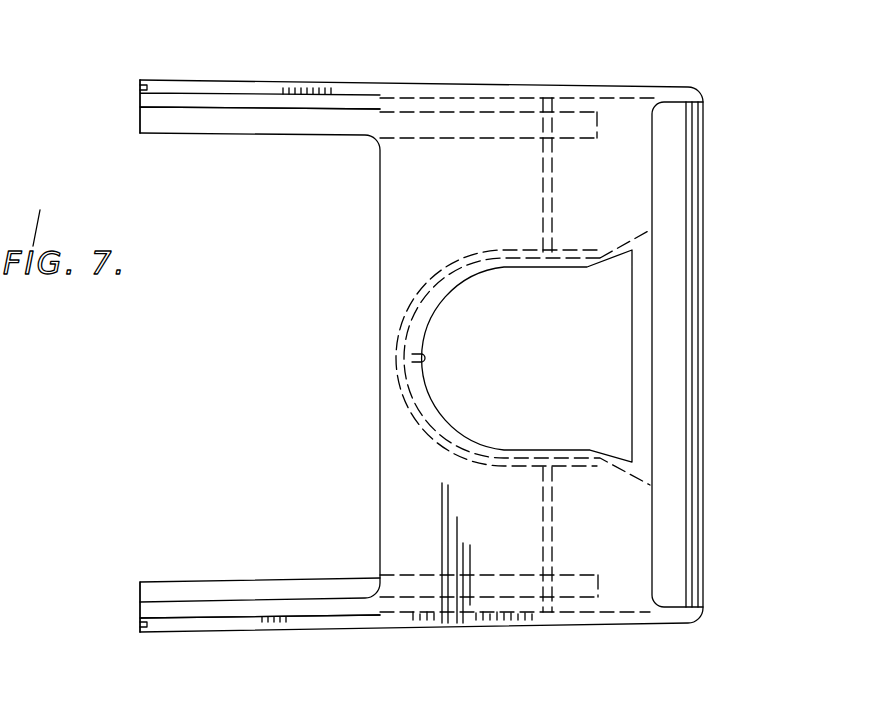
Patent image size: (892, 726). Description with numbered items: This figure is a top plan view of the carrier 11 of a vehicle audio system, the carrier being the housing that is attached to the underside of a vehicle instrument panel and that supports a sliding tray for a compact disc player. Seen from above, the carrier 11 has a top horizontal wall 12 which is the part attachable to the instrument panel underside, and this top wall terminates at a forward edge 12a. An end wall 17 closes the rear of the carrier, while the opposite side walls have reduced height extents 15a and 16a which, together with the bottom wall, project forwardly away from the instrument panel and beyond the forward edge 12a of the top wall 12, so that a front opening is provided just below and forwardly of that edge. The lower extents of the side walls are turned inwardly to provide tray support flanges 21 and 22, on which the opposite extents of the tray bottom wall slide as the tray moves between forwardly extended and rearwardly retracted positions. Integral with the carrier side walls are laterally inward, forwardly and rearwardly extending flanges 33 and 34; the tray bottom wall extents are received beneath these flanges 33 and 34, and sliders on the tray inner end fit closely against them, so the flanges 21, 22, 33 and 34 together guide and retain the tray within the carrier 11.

The carrier 11 is at (611, 80).
The top horizontal wall 12 is at (477, 545).
The forward edge of top wall 12a is at (380, 288).
The reduced height extent of side wall 15a is at (195, 620).
The reduced height extent of side wall 16a is at (195, 87).
The end wall 17 is at (704, 400).
The tray support flange 21 is at (143, 124).
The tray support flange 22 is at (143, 588).
The laterally inward flange 33 is at (263, 105).
The laterally inward flange 34 is at (312, 607).